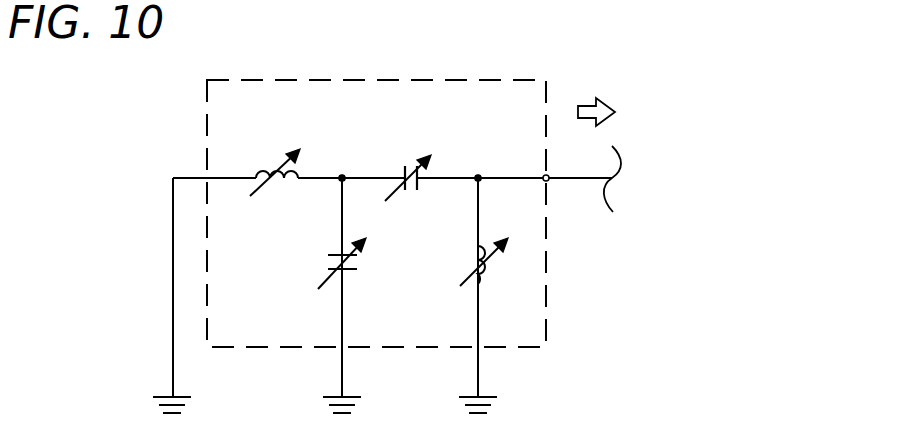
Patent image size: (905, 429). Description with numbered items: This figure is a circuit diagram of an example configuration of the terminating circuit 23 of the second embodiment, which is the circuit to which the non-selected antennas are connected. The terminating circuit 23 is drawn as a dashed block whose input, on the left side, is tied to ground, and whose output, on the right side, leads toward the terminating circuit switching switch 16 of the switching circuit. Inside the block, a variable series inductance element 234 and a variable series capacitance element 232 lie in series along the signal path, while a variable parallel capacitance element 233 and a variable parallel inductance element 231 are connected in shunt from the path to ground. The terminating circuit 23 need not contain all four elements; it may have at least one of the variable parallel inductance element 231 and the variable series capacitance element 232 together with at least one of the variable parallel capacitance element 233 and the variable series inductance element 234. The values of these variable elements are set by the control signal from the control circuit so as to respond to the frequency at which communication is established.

The terminating circuit 23 is at (207, 81).
The variable series inductance element 234 is at (284, 157).
The variable series capacitance element 232 is at (418, 158).
The variable parallel capacitance element 233 is at (326, 260).
The variable parallel inductance element 231 is at (476, 260).
The terminating circuit switching switch 16 is at (618, 115).